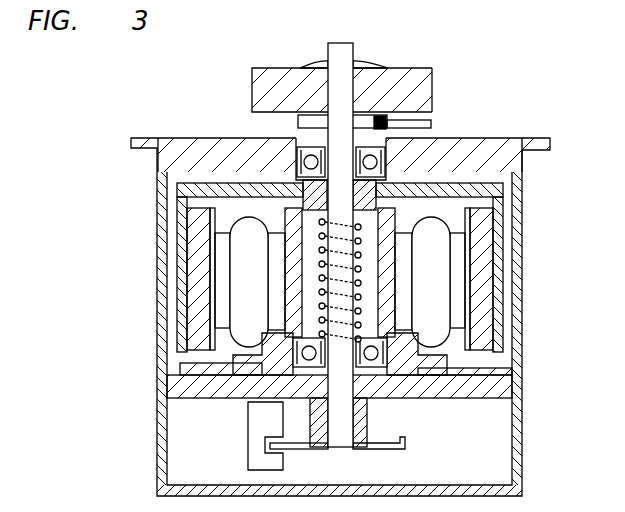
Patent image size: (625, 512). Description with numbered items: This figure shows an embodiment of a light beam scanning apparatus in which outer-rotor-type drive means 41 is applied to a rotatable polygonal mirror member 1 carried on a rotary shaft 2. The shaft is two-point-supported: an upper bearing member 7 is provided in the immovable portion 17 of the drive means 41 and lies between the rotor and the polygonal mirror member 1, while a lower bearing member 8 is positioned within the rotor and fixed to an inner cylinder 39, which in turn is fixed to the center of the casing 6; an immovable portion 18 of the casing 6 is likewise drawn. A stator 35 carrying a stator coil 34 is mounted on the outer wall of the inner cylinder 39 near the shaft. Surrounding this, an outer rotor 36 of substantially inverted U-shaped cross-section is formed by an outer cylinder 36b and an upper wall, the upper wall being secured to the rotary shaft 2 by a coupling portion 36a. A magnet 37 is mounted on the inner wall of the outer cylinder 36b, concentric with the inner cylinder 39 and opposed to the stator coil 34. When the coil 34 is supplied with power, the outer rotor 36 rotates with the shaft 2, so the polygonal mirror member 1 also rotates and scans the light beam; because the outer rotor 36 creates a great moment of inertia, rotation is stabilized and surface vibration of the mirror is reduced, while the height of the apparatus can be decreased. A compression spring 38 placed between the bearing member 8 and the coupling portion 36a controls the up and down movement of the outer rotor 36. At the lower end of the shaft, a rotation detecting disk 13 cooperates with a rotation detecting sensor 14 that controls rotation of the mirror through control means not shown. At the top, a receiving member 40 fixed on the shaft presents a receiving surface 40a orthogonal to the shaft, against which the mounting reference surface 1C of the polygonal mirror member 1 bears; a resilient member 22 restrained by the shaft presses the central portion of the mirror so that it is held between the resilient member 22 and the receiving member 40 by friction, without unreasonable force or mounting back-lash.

The rotatable polygonal mirror member 1 is at (279, 68).
The mounting reference surface 1C is at (398, 104).
The rotary shaft 2 is at (341, 43).
The casing 6 is at (165, 243).
The bearing member 7 is at (292, 158).
The bearing member 8 is at (272, 336).
The rotation detecting disk 13 is at (403, 440).
The rotation detecting sensor 14 is at (258, 422).
The immovable portion 17 is at (472, 148).
The immovable portion 18 is at (492, 398).
The resilient member 22 is at (378, 62).
The stator coil 34 is at (452, 305).
The stator 35 is at (463, 272).
The outer rotor 36 is at (496, 184).
The coupling portion 36a is at (424, 126).
The outer cylinder 36b is at (502, 212).
The magnet 37 is at (493, 240).
The compression spring 38 is at (361, 288).
The inner cylinder 39 is at (292, 253).
The receiving member 40 is at (290, 128).
The receiving surface 40a is at (298, 118).
The outer-rotor-type drive means 41 is at (158, 295).